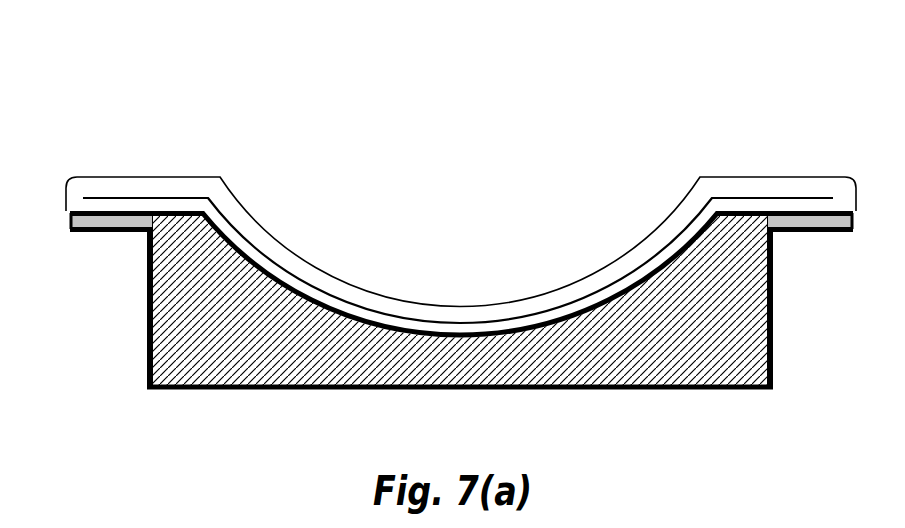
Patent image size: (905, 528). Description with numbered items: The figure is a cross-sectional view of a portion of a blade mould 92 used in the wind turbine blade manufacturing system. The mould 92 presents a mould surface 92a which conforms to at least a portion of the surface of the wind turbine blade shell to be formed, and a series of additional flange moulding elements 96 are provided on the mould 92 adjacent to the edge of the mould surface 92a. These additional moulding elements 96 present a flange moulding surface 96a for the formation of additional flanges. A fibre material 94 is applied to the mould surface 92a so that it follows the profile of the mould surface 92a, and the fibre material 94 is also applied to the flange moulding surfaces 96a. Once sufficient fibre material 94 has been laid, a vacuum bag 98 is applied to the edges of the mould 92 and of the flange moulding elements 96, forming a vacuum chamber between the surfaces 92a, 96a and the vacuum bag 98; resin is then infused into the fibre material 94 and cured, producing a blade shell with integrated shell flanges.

The blade mould 92 is at (193, 88).
The mould surface 92a is at (630, 390).
The fibre material 94 is at (328, 290).
The additional flange moulding element 96 is at (68, 232).
The flange moulding surface 96a is at (120, 232).
The vacuum bag 98 is at (522, 297).